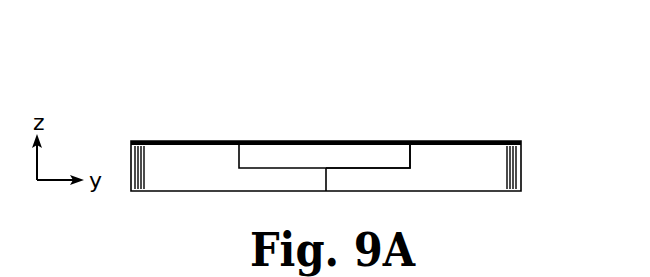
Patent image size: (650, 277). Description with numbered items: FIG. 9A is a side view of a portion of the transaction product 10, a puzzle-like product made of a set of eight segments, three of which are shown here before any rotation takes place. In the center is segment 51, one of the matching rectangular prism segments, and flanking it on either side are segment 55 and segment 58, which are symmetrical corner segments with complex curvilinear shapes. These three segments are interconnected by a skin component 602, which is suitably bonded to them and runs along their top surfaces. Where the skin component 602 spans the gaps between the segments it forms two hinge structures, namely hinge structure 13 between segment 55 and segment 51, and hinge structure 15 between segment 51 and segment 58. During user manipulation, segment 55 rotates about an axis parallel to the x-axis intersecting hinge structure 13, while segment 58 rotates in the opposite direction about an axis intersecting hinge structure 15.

The transaction product 10 is at (487, 63).
The skin component 602 is at (183, 141).
The segment 51 is at (302, 132).
The hinge structure 13 is at (243, 141).
The hinge structure 15 is at (411, 141).
The segment 55 is at (158, 195).
The segment 58 is at (500, 195).